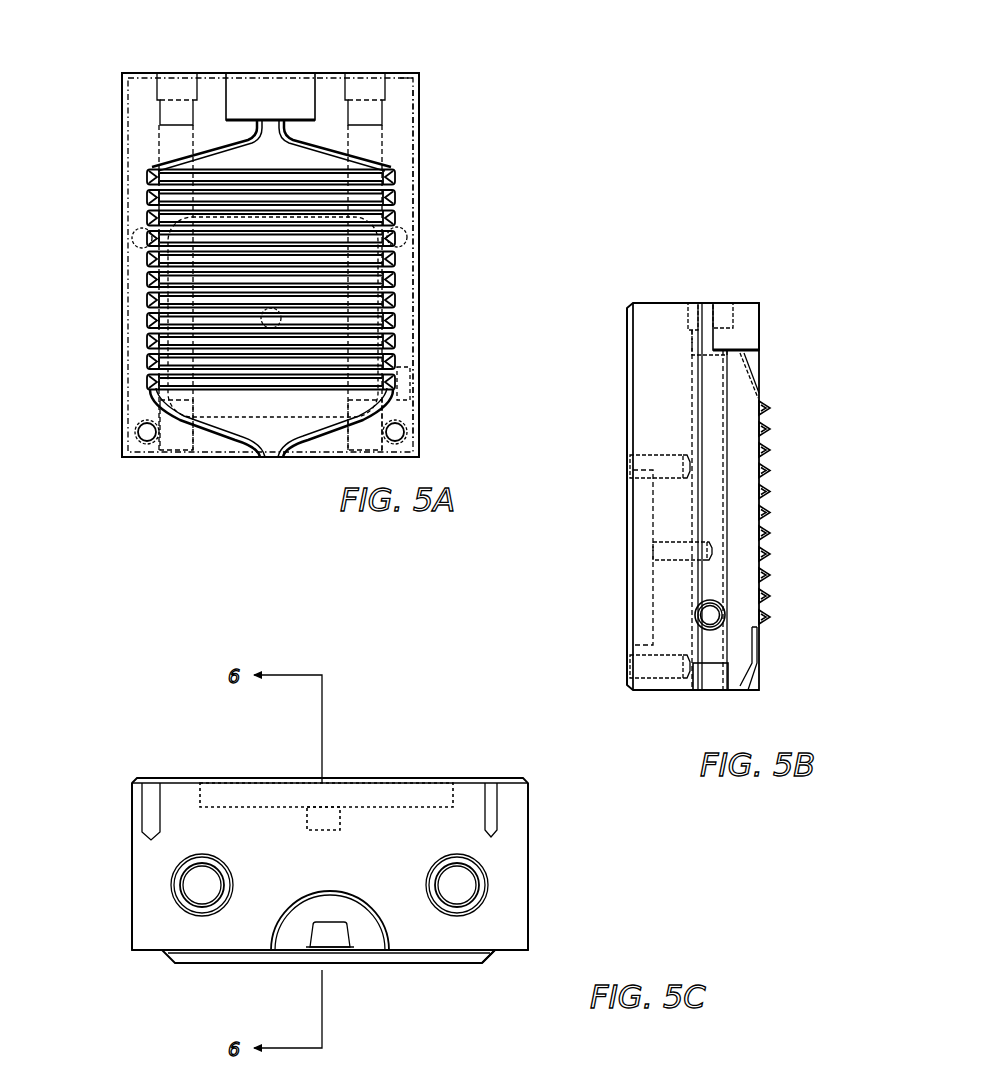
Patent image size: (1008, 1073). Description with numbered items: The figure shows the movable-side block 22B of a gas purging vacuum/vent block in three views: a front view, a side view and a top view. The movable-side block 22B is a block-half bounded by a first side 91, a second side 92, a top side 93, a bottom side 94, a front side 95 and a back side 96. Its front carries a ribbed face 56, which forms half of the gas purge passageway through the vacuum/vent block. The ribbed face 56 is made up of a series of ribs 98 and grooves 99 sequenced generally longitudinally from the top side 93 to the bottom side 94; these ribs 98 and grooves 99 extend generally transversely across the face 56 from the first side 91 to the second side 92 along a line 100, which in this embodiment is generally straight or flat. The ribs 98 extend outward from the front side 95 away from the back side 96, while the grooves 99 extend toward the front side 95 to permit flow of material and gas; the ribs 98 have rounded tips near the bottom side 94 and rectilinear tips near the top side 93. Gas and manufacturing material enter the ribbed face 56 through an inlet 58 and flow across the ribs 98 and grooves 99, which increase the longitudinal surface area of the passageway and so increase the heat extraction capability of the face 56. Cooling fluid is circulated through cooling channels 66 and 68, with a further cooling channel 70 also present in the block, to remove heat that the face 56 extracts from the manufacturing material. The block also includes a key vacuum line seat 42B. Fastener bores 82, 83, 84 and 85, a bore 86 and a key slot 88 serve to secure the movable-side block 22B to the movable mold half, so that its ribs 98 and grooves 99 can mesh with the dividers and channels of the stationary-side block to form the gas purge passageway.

In FIG. 5A, the movable-side block 22B is at (398, 88).
In FIG. 5B, the movable-side block 22B is at (740, 310).
In FIG. 5C, the movable-side block 22B is at (137, 797).
In FIG. 5A, the key vacuum line seat 42B is at (248, 87).
In FIG. 5A, the ribbed face 56 is at (318, 288).
In FIG. 5B, the ribbed face 56 is at (829, 495).
In FIG. 5C, the ribbed face 56 is at (223, 977).
In FIG. 5A, the inlet 58 is at (268, 465).
In FIG. 5A, the cooling channel 66 is at (365, 104).
In FIG. 5C, the cooling channel 66 is at (465, 888).
In FIG. 5A, the cooling channel 68 is at (165, 103).
In FIG. 5B, the cooling channel 68 is at (697, 335).
In FIG. 5C, the cooling channel 68 is at (192, 876).
In FIG. 5A, the cooling channel 70 is at (406, 393).
In FIG. 5C, the cooling channel 70 is at (530, 900).
In FIG. 5A, the fastener bore 82 is at (142, 430).
In FIG. 5B, the fastener bore 82 is at (653, 667).
In FIG. 5A, the fastener bore 83 is at (400, 434).
In FIG. 5A, the fastener bore 84 is at (408, 236).
In FIG. 5C, the fastener bore 84 is at (490, 795).
In FIG. 5A, the fastener bore 85 is at (137, 243).
In FIG. 5B, the fastener bore 85 is at (672, 467).
In FIG. 5C, the fastener bore 85 is at (150, 793).
In FIG. 5B, the bore 86 is at (667, 550).
In FIG. 5C, the bore 86 is at (333, 785).
In FIG. 5B, the key slot 88 is at (645, 503).
In FIG. 5C, the key slot 88 is at (208, 795).
In FIG. 5A, the first side 91 is at (121, 126).
In FIG. 5B, the first side 91 is at (645, 373).
In FIG. 5C, the first side 91 is at (132, 843).
In FIG. 5A, the second side 92 is at (418, 98).
In FIG. 5C, the second side 92 is at (530, 830).
In FIG. 5A, the top side 93 is at (138, 73).
In FIG. 5B, the top side 93 is at (673, 303).
In FIG. 5C, the top side 93 is at (137, 897).
In FIG. 5A, the bottom side 94 is at (153, 470).
In FIG. 5B, the bottom side 94 is at (680, 690).
In FIG. 5A, the front side 95 is at (412, 138).
In FIG. 5B, the front side 95 is at (762, 330).
In FIG. 5C, the front side 95 is at (505, 950).
In FIG. 5B, the back side 96 is at (627, 333).
In FIG. 5A, the rib 98 is at (406, 331).
In FIG. 5B, the rib 98 is at (769, 453).
In FIG. 5A, the groove 99 is at (410, 367).
In FIG. 5B, the groove 99 is at (770, 480).
In FIG. 5C, the line 100 is at (387, 989).